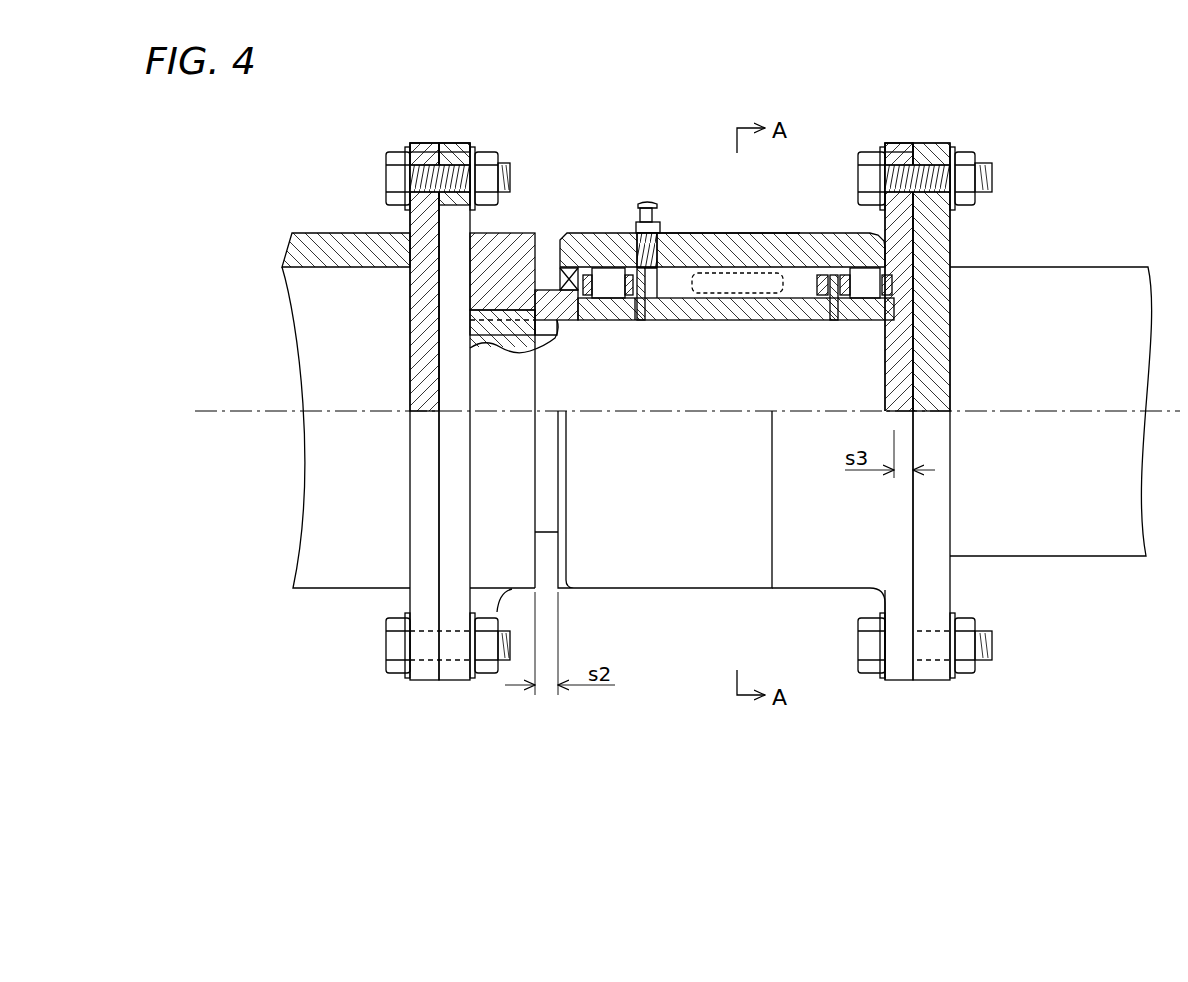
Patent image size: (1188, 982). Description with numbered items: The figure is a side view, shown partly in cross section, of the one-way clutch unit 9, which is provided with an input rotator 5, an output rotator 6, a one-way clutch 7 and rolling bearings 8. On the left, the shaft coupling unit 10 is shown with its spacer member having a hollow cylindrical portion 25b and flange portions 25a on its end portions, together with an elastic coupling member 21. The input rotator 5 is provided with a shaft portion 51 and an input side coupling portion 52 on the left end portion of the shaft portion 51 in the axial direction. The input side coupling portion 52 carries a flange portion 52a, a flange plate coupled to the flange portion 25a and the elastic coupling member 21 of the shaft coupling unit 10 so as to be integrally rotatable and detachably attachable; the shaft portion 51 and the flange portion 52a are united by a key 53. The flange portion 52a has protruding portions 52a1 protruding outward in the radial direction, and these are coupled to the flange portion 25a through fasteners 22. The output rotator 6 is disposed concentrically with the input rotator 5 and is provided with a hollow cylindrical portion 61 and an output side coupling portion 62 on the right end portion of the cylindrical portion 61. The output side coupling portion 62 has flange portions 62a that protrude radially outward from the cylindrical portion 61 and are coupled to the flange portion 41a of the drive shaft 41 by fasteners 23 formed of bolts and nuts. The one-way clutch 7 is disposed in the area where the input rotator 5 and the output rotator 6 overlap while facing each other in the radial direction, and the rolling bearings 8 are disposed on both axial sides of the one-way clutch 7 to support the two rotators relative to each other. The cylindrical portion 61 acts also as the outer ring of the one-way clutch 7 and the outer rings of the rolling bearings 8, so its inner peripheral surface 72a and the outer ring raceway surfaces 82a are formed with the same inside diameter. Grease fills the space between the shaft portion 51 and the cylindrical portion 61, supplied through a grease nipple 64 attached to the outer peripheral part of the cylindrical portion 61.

The input rotator 5 is at (666, 366).
The output rotator 6 is at (736, 359).
The one-way clutch 7 is at (705, 233).
The rolling bearings 8 is at (737, 332).
The one-way clutch unit 9 is at (858, 690).
The shaft coupling unit 10 is at (408, 385).
The elastic coupling member 21 is at (458, 143).
The fasteners 22 is at (365, 148).
The fasteners 23 is at (949, 412).
The flange portion 25a is at (424, 143).
The cylindrical portion 25b is at (325, 233).
The drive shaft 41 is at (1037, 411).
The flange portion 41a is at (945, 585).
The shaft portion 51 is at (775, 333).
The input side coupling portion 52 is at (488, 135).
The flange portion 52a is at (517, 243).
The protruding portions 52a1 is at (497, 140).
The key 53 is at (500, 328).
The cylindrical portion 61 is at (767, 233).
The output side coupling portion 62 is at (900, 120).
The flange portions 62a is at (897, 143).
The grease nipple 64 is at (645, 200).
The inner peripheral surface of the outer ring 72a is at (805, 322).
The outer ring raceway surfaces 82a is at (640, 315).